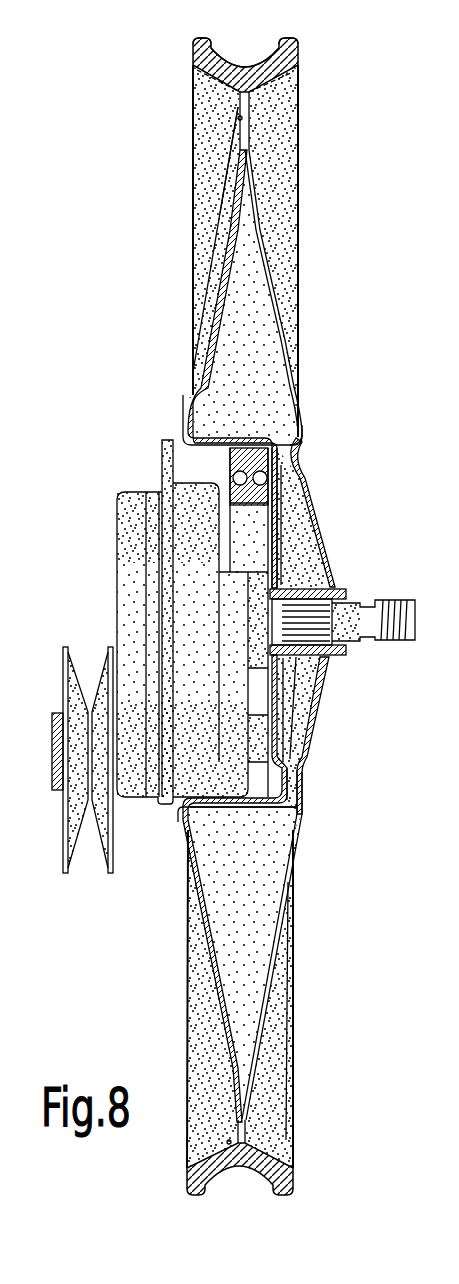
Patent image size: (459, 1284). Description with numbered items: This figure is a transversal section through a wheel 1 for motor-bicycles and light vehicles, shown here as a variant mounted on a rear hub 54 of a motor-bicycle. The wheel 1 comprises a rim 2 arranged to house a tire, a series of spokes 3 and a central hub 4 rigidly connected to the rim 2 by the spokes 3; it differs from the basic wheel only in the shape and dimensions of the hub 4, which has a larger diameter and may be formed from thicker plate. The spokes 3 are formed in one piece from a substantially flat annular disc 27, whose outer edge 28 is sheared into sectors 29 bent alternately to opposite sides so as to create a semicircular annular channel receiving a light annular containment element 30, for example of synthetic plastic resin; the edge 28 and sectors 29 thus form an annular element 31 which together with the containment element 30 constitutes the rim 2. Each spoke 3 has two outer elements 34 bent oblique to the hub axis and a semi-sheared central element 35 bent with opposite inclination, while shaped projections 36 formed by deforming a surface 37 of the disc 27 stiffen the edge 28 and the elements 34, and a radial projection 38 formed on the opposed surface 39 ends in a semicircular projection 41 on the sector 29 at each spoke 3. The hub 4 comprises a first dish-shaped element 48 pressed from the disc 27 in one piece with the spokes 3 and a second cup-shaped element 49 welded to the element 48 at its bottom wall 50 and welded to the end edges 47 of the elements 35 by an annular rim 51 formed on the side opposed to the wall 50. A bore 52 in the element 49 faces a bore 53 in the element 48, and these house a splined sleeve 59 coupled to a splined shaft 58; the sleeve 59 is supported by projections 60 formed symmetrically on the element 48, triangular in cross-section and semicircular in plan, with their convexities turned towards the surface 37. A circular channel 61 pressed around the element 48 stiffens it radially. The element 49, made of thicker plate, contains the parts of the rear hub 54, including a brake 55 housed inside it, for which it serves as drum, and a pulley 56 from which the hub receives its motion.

The wheel 1 is at (364, 108).
The rim 2 is at (251, 56).
The spokes 3 is at (279, 253).
The central hub 4 is at (307, 801).
The annular disc 27 is at (252, 119).
The outer edge 28 is at (256, 97).
The sectors 29 is at (191, 62).
The annular containment element 30 is at (199, 59).
The annular element 31 is at (230, 103).
The outer elements 34 is at (256, 232).
The semi-sheared central element 35 is at (222, 300).
The shaped projections 36 is at (231, 1118).
The surface 37 is at (307, 413).
The projection 38 is at (224, 221).
The surface 39 is at (217, 255).
The semicircular projection 41 is at (238, 119).
The shaped end edge 47 is at (195, 413).
The first dish-shaped element 48 is at (317, 518).
The second cup-shaped element 49 is at (245, 808).
The bottom wall 50 is at (307, 702).
The annular rim 51 is at (182, 412).
The bore 52 is at (298, 660).
The bore 53 is at (345, 658).
The rear hub 54 is at (113, 545).
The brake 55 is at (155, 802).
The pulley 56 is at (97, 842).
The splined shaft 58 is at (323, 622).
The splined sleeve 59 is at (337, 589).
The projections 60 is at (316, 537).
The circular channel 61 is at (309, 779).